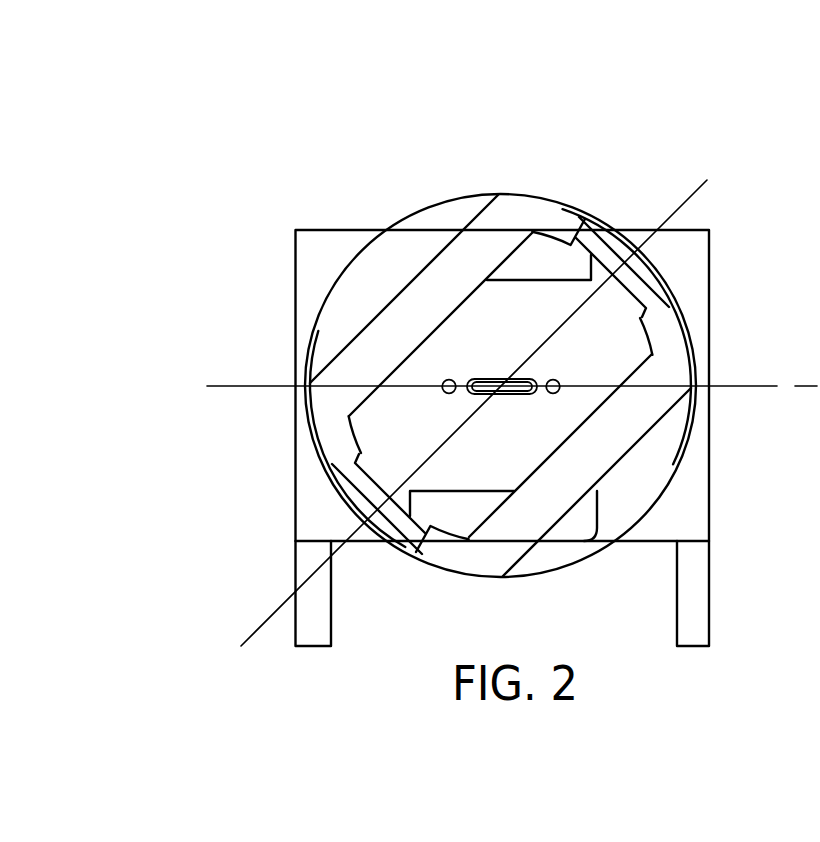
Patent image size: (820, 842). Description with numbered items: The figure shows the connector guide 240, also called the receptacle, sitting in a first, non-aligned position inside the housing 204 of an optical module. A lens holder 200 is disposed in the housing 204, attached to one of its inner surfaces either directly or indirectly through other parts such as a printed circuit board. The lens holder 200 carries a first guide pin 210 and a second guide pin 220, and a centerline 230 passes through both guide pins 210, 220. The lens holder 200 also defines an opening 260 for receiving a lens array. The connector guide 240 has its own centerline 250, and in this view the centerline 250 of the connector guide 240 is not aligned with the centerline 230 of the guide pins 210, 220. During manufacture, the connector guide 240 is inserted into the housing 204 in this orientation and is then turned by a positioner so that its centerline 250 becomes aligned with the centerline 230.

The lens holder 200 is at (577, 527).
The housing 204 is at (690, 512).
The first guide pin 210 is at (452, 380).
The second guide pin 220 is at (562, 384).
The centerline of the guide pins 230 is at (257, 386).
The connector guide 240 is at (521, 207).
The centerline of the connector guide 250 is at (408, 480).
The opening 260 is at (495, 392).